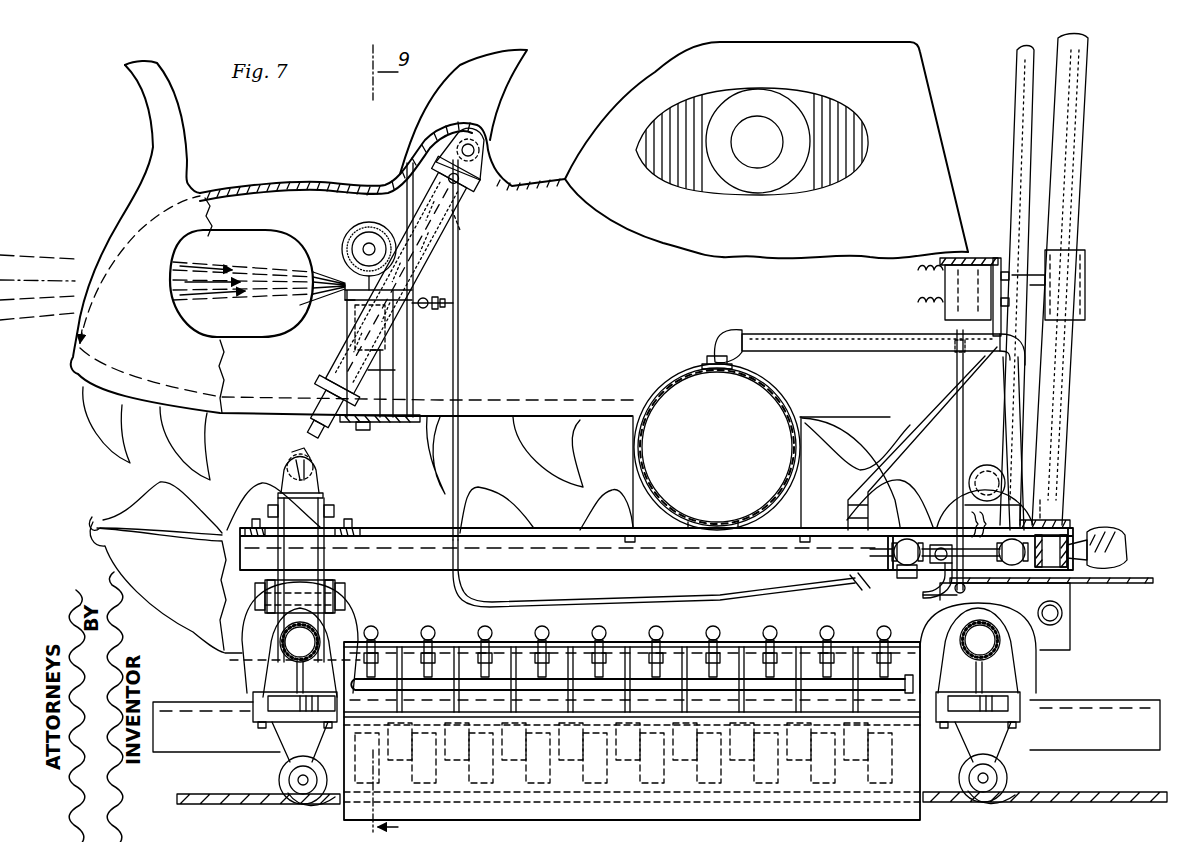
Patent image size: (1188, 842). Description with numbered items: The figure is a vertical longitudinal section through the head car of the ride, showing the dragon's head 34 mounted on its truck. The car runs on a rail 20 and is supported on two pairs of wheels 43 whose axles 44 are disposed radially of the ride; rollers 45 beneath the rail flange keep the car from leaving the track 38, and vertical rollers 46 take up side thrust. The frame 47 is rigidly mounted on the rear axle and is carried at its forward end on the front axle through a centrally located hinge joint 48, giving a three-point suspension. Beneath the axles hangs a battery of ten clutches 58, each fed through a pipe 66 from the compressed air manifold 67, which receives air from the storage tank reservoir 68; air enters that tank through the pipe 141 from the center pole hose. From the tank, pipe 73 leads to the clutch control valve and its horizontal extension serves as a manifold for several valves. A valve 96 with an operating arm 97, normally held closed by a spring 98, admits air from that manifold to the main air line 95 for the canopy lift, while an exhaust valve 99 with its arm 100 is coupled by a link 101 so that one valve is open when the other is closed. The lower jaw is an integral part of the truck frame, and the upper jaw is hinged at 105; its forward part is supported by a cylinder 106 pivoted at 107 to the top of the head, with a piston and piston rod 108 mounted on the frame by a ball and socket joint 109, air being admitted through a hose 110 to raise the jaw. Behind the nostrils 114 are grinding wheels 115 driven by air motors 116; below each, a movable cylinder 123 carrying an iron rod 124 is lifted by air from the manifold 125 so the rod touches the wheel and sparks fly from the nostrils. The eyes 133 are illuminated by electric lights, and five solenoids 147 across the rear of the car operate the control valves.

The track rail 20 is at (1130, 698).
The dragon head body 34 is at (640, 82).
The rail 38 is at (1140, 794).
The wheels 43 is at (352, 628).
The axles 44 is at (1005, 643).
The rollers 45 is at (280, 774).
The vertical rollers 46 is at (262, 703).
The frame 47 is at (390, 566).
The hinge joint 48 is at (255, 596).
The clutches 58 is at (668, 652).
The pipe 66 is at (604, 643).
The compressed air manifold 67 is at (788, 678).
The storage tank reservoir 68 is at (660, 386).
The pipe 73 is at (1062, 613).
The main air line 95 is at (1140, 580).
The valve 96 is at (1070, 527).
The operating arm 97 is at (1032, 505).
The spring 98 is at (1042, 505).
The exhaust valve 99 is at (900, 563).
The operating arm 100 is at (932, 572).
The link 101 is at (968, 590).
The hinge 105 is at (1000, 488).
The cylinder 106 is at (440, 248).
The pivot 107 is at (482, 150).
The piston and piston rod 108 is at (458, 212).
The ball and socket joint 109 is at (322, 468).
The hose 110 is at (462, 274).
The nostrils 114 is at (192, 256).
The grinding wheels 115 is at (348, 236).
The air motor 116 is at (378, 232).
The movable cylinder 123 is at (396, 374).
The rod 124 is at (345, 285).
The manifold 125 is at (424, 320).
The eyes 133 is at (838, 118).
The pipe 141 is at (1027, 71).
The solenoids 147 is at (975, 265).